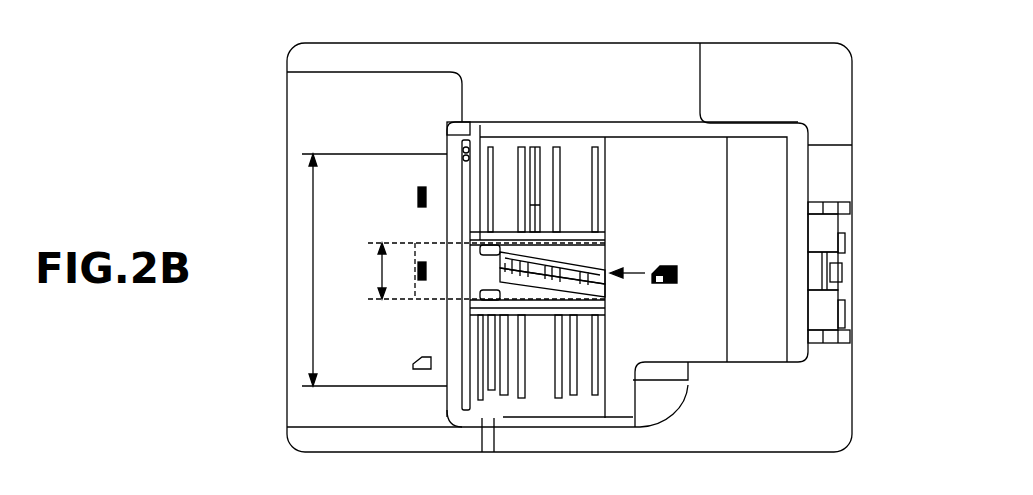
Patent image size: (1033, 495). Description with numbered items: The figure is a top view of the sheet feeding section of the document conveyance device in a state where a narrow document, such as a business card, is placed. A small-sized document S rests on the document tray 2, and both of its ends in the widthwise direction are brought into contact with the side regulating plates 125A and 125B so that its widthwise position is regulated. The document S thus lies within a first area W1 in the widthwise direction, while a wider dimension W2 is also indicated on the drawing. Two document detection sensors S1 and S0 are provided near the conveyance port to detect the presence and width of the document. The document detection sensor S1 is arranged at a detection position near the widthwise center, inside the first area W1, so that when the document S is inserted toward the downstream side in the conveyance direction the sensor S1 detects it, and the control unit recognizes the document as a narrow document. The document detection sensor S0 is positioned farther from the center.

The document tray 2 is at (775, 173).
The side regulating plate 125A is at (605, 306).
The side regulating plate 125B is at (605, 243).
The document detection sensor S0 is at (418, 197).
The document detection sensor S1 is at (418, 270).
The document S is at (445, 302).
The first area W1 is at (469, 271).
The second width W2 is at (374, 270).